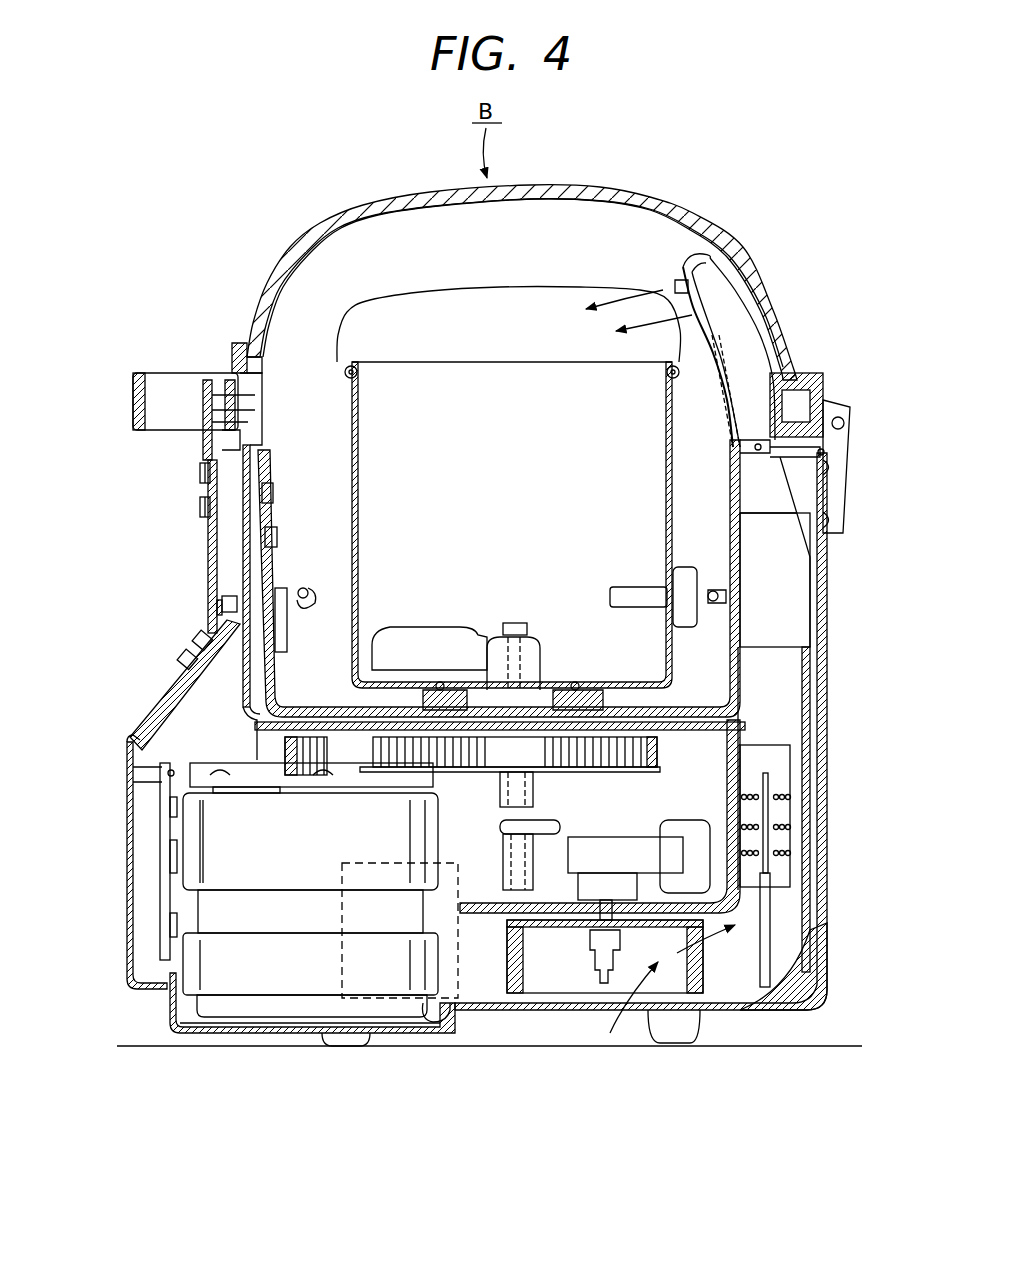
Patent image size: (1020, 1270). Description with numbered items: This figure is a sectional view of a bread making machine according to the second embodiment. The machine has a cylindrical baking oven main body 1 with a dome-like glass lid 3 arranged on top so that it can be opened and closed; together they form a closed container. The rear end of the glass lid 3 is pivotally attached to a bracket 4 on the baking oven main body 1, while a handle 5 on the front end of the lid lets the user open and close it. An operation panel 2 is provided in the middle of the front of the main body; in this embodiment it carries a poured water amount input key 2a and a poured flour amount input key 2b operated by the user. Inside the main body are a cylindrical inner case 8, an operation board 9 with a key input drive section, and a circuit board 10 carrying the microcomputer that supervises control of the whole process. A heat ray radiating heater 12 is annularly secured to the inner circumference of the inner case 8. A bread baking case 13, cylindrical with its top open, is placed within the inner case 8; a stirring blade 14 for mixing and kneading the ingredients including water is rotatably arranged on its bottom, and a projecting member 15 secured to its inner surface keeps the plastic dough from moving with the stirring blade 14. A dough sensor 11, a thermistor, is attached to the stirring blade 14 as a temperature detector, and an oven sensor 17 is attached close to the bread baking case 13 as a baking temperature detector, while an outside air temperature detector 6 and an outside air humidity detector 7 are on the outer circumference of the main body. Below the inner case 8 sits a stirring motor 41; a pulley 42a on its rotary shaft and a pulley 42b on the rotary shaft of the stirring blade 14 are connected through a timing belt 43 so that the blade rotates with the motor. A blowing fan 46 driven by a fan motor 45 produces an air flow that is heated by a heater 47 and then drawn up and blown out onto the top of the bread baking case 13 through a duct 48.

The baking oven main body 1 is at (130, 830).
The operation panel 2 is at (162, 679).
The poured water amount input key 2a is at (198, 636).
The poured flour amount input key 2b is at (183, 656).
The glass lid 3 is at (335, 220).
The bracket 4 is at (847, 441).
The handle 5 is at (168, 384).
The outside air temperature detector 6 is at (200, 472).
The outside air humidity detector 7 is at (200, 507).
The inner case 8 is at (730, 477).
The operation board 9 is at (216, 605).
The circuit board 10 is at (160, 853).
The dough sensor 11 is at (517, 623).
The heat ray radiating heater 12 is at (305, 608).
The bread baking case 13 is at (385, 460).
The stirring blade 14 is at (420, 625).
The projecting member 15 is at (632, 585).
The oven sensor 17 is at (272, 490).
The stirring motor 41 is at (190, 989).
The pulley 42a is at (317, 760).
The pulley 42b is at (600, 762).
The timing belt 43 is at (358, 757).
The fan motor 45 is at (597, 852).
The blowing fan 46 is at (568, 973).
The heater 47 is at (780, 818).
The duct 48 is at (700, 302).